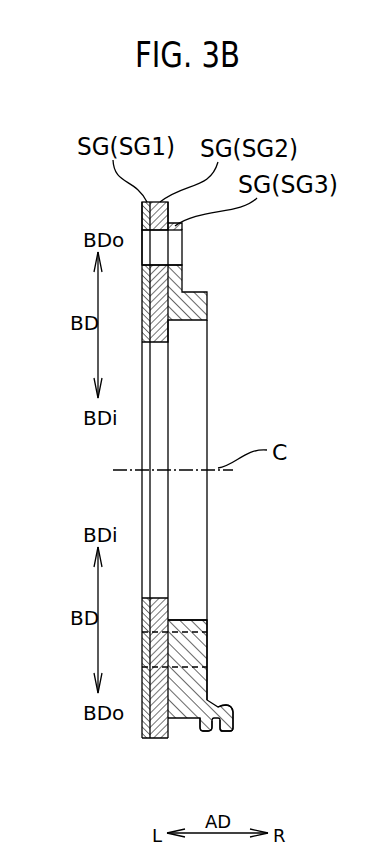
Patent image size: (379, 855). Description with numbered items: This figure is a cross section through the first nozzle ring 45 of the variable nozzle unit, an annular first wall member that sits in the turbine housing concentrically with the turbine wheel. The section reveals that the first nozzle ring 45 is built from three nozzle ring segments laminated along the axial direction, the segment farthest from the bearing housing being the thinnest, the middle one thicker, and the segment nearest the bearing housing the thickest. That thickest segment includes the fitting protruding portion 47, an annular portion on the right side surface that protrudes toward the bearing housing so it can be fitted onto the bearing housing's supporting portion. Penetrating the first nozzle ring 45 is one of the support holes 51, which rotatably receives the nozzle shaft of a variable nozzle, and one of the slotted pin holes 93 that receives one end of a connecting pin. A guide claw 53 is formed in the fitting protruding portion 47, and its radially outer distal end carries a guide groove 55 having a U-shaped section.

The first nozzle ring 45 is at (247, 327).
The pin hole 93 is at (175, 250).
The fitting protruding portion 47 is at (203, 622).
The support hole 51 is at (200, 660).
The guide claw 53 is at (233, 713).
The guide groove 55 is at (208, 722).